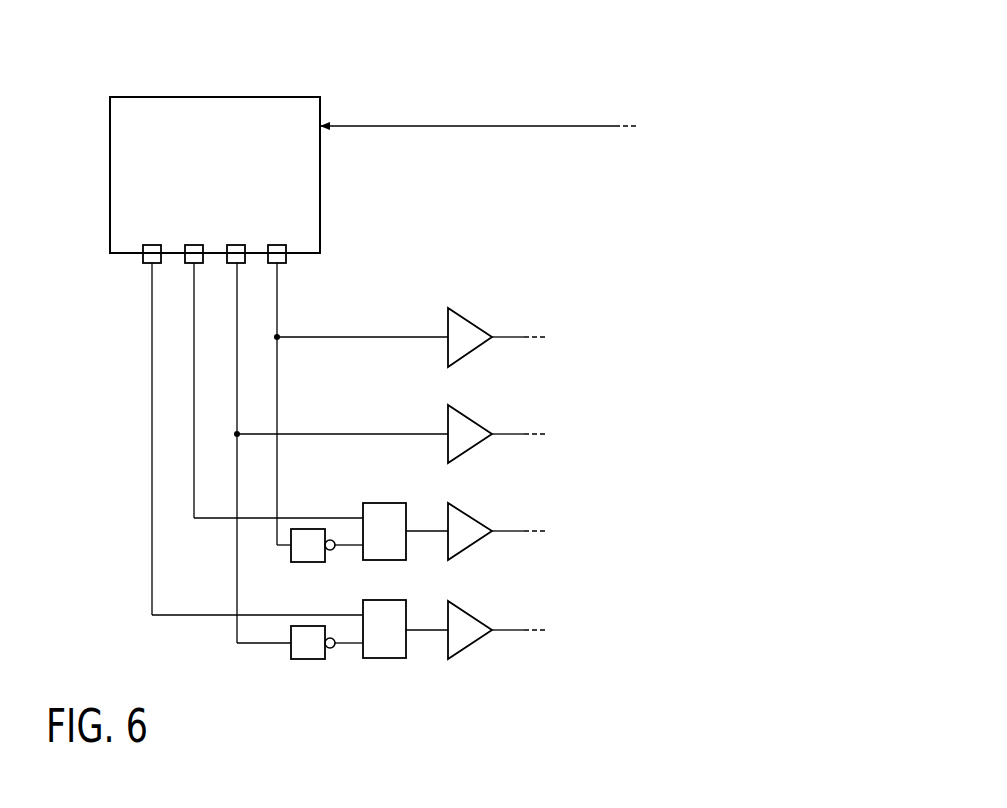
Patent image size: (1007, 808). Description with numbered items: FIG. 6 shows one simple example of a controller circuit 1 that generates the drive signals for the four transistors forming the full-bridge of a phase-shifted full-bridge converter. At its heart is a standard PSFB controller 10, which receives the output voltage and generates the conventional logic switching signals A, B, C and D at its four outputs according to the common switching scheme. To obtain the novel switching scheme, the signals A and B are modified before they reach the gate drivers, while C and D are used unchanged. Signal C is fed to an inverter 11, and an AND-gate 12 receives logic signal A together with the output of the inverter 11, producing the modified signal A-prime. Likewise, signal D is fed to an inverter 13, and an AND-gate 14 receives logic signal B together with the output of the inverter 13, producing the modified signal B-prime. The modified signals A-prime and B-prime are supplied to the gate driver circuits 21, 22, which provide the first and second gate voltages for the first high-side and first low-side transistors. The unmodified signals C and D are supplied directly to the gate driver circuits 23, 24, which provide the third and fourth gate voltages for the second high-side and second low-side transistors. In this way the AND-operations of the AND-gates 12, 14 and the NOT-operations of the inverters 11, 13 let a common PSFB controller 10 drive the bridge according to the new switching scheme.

The controller circuit 1 is at (640, 50).
The PSFB controller 10 is at (215, 180).
The inverter 11 is at (305, 646).
The AND-gate 12 is at (388, 648).
The inverter 13 is at (305, 535).
The AND-gate 14 is at (373, 515).
The gate driver circuit 21 is at (467, 630).
The gate driver circuit 22 is at (467, 531).
The gate driver circuit 23 is at (466, 434).
The gate driver circuit 24 is at (466, 337).